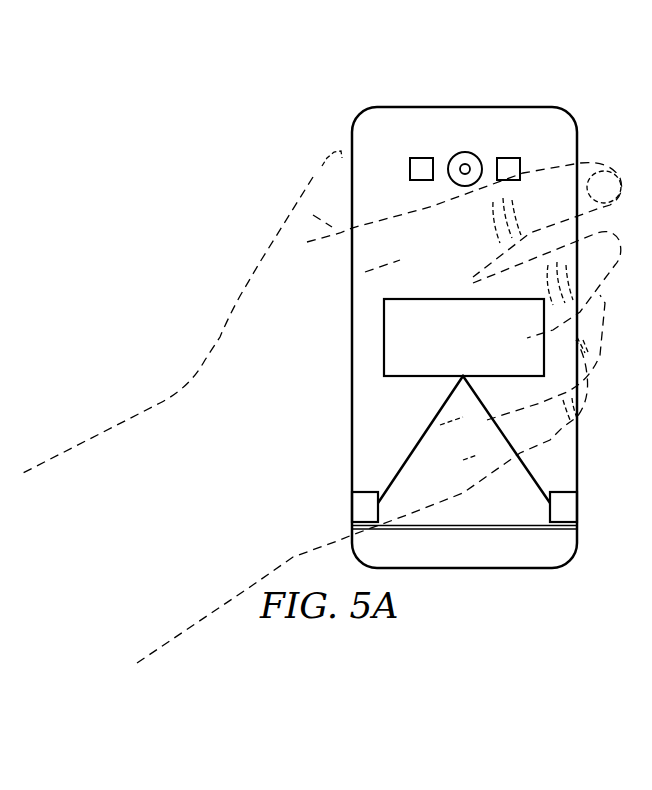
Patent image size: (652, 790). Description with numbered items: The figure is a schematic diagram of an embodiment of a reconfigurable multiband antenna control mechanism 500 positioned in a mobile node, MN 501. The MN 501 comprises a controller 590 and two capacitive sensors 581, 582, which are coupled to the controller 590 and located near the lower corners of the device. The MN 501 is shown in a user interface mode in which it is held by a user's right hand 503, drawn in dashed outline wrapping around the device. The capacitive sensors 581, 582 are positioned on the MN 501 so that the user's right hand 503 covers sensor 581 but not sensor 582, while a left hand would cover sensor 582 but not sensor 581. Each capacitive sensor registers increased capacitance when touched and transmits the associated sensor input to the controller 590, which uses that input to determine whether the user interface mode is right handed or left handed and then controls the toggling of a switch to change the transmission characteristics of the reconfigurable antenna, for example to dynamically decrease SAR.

The reconfigurable multiband antenna control mechanism 500 is at (228, 118).
The MN 501 is at (462, 107).
The user's right hand 503 is at (313, 173).
The controller 590 is at (462, 299).
The capacitive sensor 581 is at (370, 492).
The capacitive sensor 582 is at (550, 513).